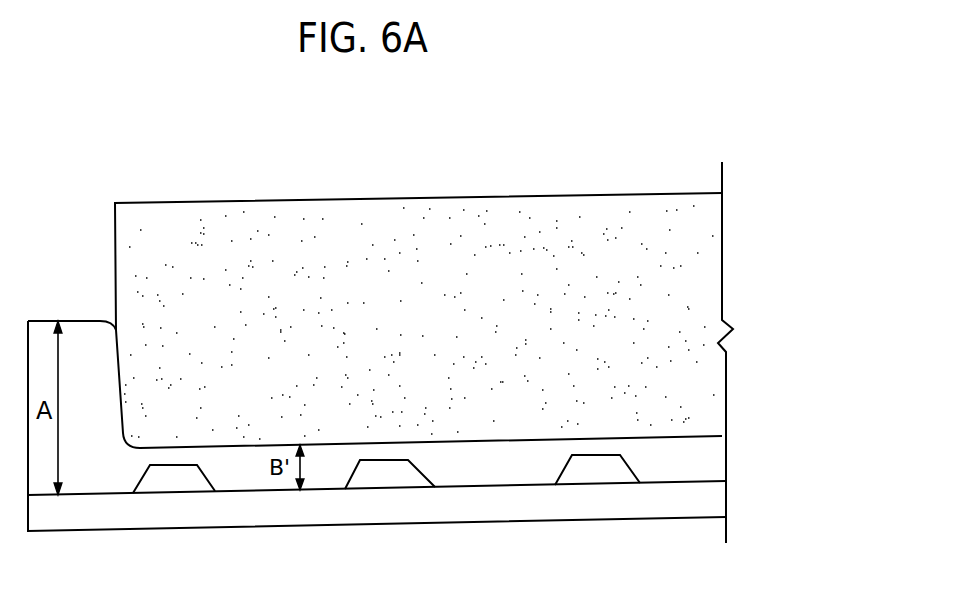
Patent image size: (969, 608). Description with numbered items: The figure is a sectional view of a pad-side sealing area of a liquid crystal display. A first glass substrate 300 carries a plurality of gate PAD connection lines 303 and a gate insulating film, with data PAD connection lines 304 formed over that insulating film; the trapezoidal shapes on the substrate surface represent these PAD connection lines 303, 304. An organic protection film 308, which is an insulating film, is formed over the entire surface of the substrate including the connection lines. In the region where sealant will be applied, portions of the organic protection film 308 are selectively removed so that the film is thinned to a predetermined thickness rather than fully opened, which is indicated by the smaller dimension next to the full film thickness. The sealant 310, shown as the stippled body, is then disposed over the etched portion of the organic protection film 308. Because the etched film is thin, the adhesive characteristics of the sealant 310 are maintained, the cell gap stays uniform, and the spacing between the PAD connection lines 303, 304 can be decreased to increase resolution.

The first glass substrate 300 is at (717, 502).
The gate PAD connection lines 303 is at (418, 517).
The data PAD connection lines 304 is at (597, 477).
The organic protection film 308 is at (490, 478).
The sealant 310 is at (714, 248).